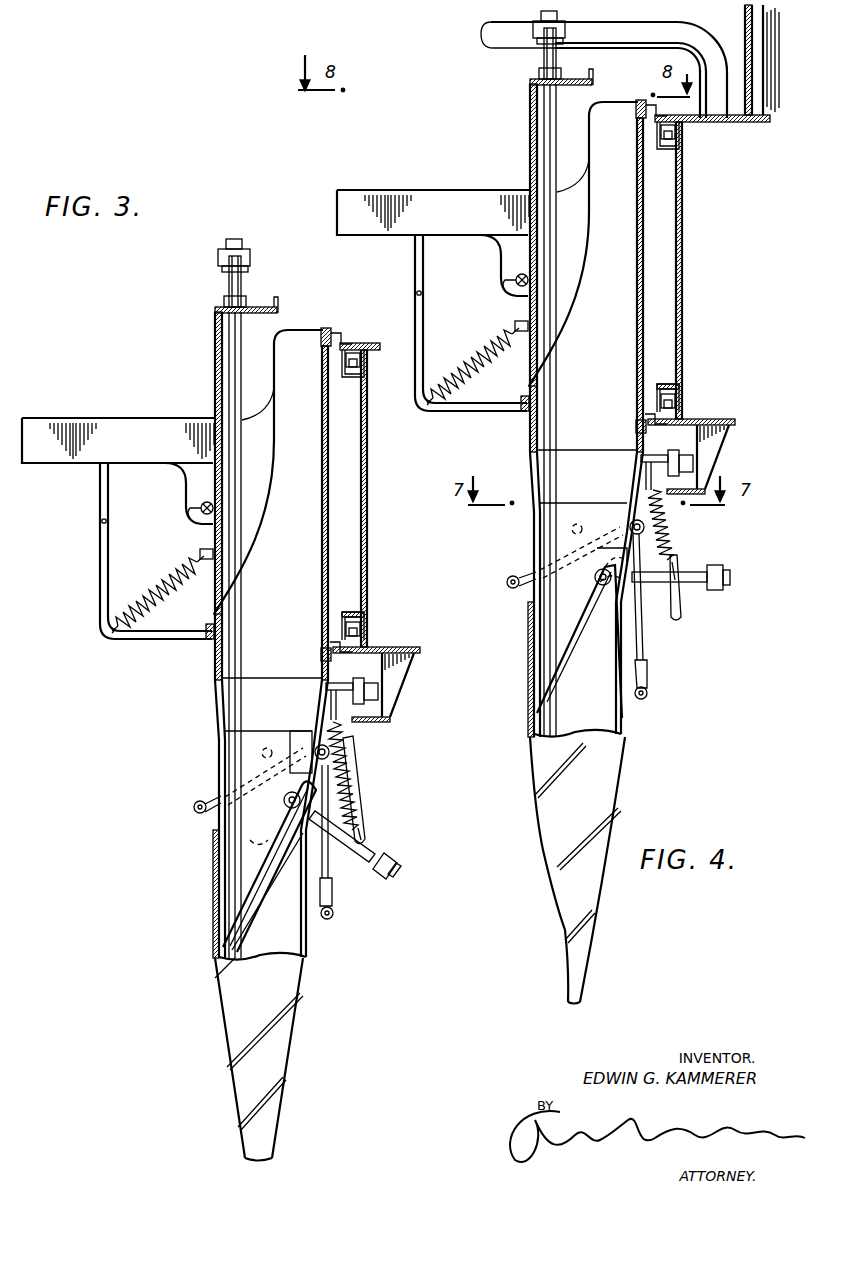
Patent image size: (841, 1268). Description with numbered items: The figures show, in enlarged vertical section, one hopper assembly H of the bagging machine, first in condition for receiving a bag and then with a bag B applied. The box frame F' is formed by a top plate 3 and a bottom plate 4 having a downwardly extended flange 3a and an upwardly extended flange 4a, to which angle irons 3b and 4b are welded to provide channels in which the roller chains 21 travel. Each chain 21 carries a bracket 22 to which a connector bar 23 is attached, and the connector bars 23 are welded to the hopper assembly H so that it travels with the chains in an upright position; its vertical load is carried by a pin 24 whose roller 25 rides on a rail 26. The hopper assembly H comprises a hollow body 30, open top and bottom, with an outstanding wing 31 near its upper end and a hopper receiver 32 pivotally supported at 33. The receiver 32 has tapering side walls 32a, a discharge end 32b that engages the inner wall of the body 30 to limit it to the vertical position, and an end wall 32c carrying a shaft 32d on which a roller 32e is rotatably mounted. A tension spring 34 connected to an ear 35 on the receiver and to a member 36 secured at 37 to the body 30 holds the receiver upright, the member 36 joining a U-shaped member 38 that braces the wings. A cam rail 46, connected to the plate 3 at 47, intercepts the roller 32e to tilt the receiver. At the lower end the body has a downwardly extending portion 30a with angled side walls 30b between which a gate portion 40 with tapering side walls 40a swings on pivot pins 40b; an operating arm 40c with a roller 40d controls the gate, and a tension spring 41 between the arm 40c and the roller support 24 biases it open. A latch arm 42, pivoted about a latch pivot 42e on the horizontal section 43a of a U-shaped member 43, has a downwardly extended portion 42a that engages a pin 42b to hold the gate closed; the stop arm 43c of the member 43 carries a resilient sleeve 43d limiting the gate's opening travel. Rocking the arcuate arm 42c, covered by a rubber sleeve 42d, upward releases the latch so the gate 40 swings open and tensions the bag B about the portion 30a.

In FIG. 3, the top plate 3 is at (372, 344).
In FIG. 4, the top plate 3 is at (717, 72).
In FIG. 3, the downwardly extended flange 3a is at (368, 410).
In FIG. 4, the downwardly extended flange 3a is at (698, 270).
In FIG. 3, the angle iron 3b is at (353, 378).
In FIG. 4, the angle iron 3b is at (662, 155).
In FIG. 3, the bottom plate 4 is at (415, 648).
In FIG. 4, the bottom plate 4 is at (706, 442).
In FIG. 3, the upwardly extended flange 4a is at (368, 607).
In FIG. 4, the upwardly extended flange 4a is at (700, 372).
In FIG. 3, the angle iron 4b is at (353, 614).
In FIG. 4, the angle iron 4b is at (636, 385).
In FIG. 3, the roller chain 21 is at (361, 360).
In FIG. 4, the roller chain 21 is at (635, 140).
In FIG. 3, the bracket 22 is at (342, 344).
In FIG. 4, the bracket 22 is at (664, 106).
In FIG. 3, the connector bar 23 is at (333, 332).
In FIG. 4, the connector bar 23 is at (629, 100).
In FIG. 3, the pin 24 is at (326, 688).
In FIG. 4, the pin 24 is at (627, 463).
In FIG. 3, the roller 25 is at (364, 688).
In FIG. 4, the roller 25 is at (712, 463).
In FIG. 3, the rail 26 is at (378, 692).
In FIG. 4, the rail 26 is at (717, 452).
In FIG. 3, the hopper body 30 is at (329, 575).
In FIG. 4, the hopper body 30 is at (556, 427).
In FIG. 3, the downwardly extending portion 30a is at (214, 856).
In FIG. 4, the downwardly extending portion 30a is at (502, 663).
In FIG. 3, the side walls 30b is at (258, 832).
In FIG. 4, the side walls 30b is at (585, 647).
In FIG. 3, the wing 31 is at (122, 418).
In FIG. 4, the wing 31 is at (433, 193).
In FIG. 3, the hopper receiver 32 is at (215, 344).
In FIG. 4, the hopper receiver 32 is at (516, 410).
In FIG. 3, the side walls 32a is at (262, 358).
In FIG. 4, the side walls 32a is at (583, 244).
In FIG. 3, the discharge end 32b is at (224, 613).
In FIG. 4, the discharge end 32b is at (559, 393).
In FIG. 3, the end wall 32c is at (259, 308).
In FIG. 4, the end wall 32c is at (561, 77).
In FIG. 3, the shaft 32d is at (229, 283).
In FIG. 4, the shaft 32d is at (511, 55).
In FIG. 3, the roller 32e is at (222, 258).
In FIG. 4, the roller 32e is at (502, 26).
In FIG. 3, the pivot 33 is at (200, 508).
In FIG. 4, the pivot 33 is at (492, 284).
In FIG. 3, the tension spring 34 is at (168, 574).
In FIG. 4, the tension spring 34 is at (469, 366).
In FIG. 3, the ear 35 is at (206, 549).
In FIG. 4, the ear 35 is at (503, 319).
In FIG. 3, the member 36 is at (112, 636).
In FIG. 4, the member 36 is at (422, 425).
In FIG. 3, the weld connection 37 is at (208, 640).
In FIG. 4, the weld connection 37 is at (496, 415).
In FIG. 3, the U-shaped member 38 is at (100, 498).
In FIG. 4, the U-shaped member 38 is at (444, 323).
In FIG. 3, the gate portion 40 is at (277, 882).
In FIG. 4, the gate portion 40 is at (579, 641).
In FIG. 3, the side walls 40a is at (258, 882).
In FIG. 4, the side walls 40a is at (586, 629).
In FIG. 3, the pivot pins 40b is at (284, 800).
In FIG. 4, the pivot pins 40b is at (585, 595).
In FIG. 3, the operating arm 40c is at (338, 851).
In FIG. 4, the operating arm 40c is at (701, 562).
In FIG. 3, the roller 40d is at (400, 860).
In FIG. 4, the roller 40d is at (741, 584).
In FIG. 3, the tension spring 41 is at (352, 722).
In FIG. 4, the tension spring 41 is at (671, 498).
In FIG. 3, the latch arm 42 is at (356, 756).
In FIG. 4, the latch arm 42 is at (632, 518).
In FIG. 3, the downwardly extended portion 42a is at (361, 796).
In FIG. 4, the downwardly extended portion 42a is at (697, 587).
In FIG. 3, the pin 42b is at (374, 850).
In FIG. 4, the pin 42b is at (699, 557).
In FIG. 3, the arcuate arm 42c is at (196, 810).
In FIG. 4, the arcuate arm 42c is at (483, 575).
In FIG. 3, the rubber sleeve 42d is at (210, 800).
In FIG. 4, the rubber sleeve 42d is at (544, 556).
In FIG. 3, the pivot pin 42e is at (318, 745).
In FIG. 4, the pivot pin 42e is at (600, 505).
In FIG. 3, the U-shaped member 43 is at (333, 900).
In FIG. 4, the U-shaped member 43 is at (658, 597).
In FIG. 3, the horizontal section 43a is at (304, 758).
In FIG. 4, the horizontal section 43a is at (595, 534).
In FIG. 3, the stop arm 43c is at (334, 916).
In FIG. 4, the stop arm 43c is at (664, 698).
In FIG. 4, the resilient sleeve 43d is at (668, 672).
In FIG. 4, the cam rail 46 is at (608, 65).
In FIG. 4, the connection 47 is at (713, 131).
In FIG. 3, the bag B is at (292, 980).
In FIG. 4, the bag B is at (596, 870).
In FIG. 3, the hopper assembly H is at (337, 546).
In FIG. 4, the hopper assembly H is at (679, 280).
In FIG. 3, the box frame F' is at (382, 495).
In FIG. 4, the box frame F' is at (706, 320).